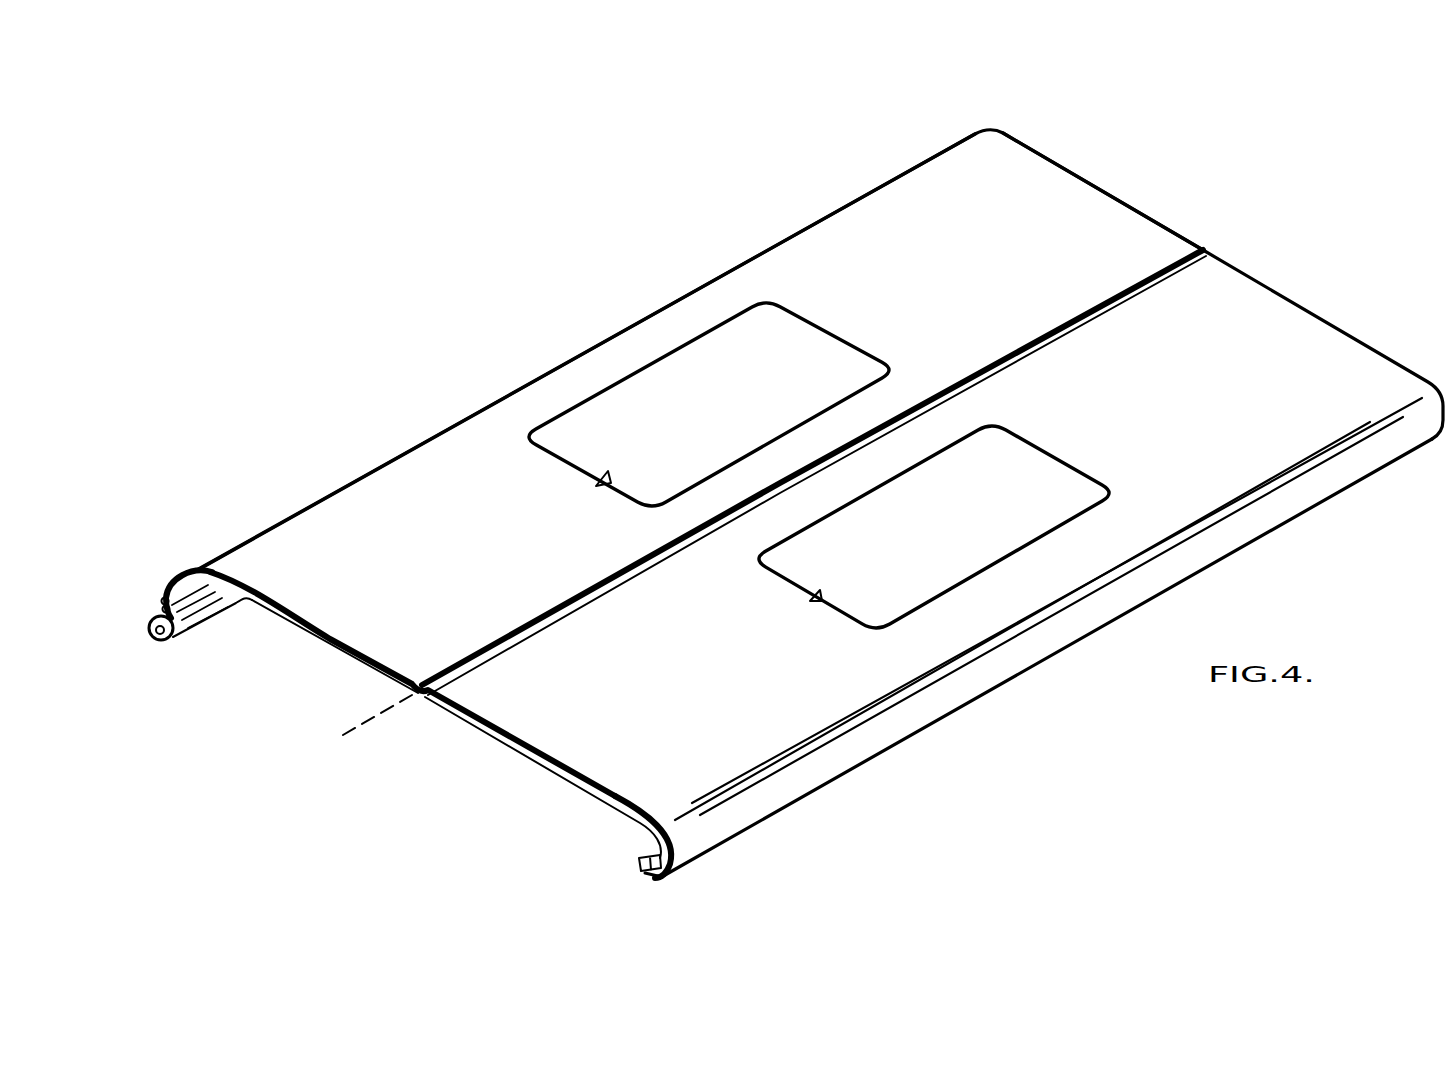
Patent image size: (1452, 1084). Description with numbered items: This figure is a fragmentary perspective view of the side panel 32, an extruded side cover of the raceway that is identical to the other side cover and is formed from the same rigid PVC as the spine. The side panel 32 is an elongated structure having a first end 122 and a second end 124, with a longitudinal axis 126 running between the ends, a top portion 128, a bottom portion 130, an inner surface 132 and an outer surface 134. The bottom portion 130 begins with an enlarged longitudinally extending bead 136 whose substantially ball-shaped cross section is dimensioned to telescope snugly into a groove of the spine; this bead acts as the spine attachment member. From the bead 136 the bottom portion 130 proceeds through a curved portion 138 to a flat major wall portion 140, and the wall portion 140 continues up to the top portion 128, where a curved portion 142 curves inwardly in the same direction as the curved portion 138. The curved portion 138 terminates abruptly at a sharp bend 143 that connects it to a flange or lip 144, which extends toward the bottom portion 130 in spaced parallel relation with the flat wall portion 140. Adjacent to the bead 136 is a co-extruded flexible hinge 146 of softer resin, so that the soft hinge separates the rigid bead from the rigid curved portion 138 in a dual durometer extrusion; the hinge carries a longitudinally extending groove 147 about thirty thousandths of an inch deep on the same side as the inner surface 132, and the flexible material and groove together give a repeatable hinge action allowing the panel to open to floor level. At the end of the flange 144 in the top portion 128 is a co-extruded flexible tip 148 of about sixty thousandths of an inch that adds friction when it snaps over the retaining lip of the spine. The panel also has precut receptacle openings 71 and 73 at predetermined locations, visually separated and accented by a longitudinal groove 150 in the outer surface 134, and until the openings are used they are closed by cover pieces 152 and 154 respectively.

The side panel 32 is at (612, 304).
The flat major wall portion 140 is at (430, 470).
The second end 124 is at (1126, 198).
The curved portion 142 is at (904, 722).
The top portion 128 is at (1007, 691).
The longitudinal groove 150 is at (542, 620).
The cover piece 152 is at (826, 348).
The cover piece 154 is at (1047, 480).
The receptacle opening 71 is at (596, 486).
The receptacle opening 73 is at (810, 601).
The outer surface 134 is at (644, 790).
The curved portion 138 is at (190, 575).
The first end 122 is at (372, 623).
The inner surface 132 is at (560, 770).
The bottom portion 130 is at (244, 604).
The hinge groove 147 is at (200, 630).
The flexible hinge 146 is at (160, 602).
The bead (spine attachment member) 136 is at (157, 641).
The longitudinal axis 126 is at (385, 717).
The sharp bend 143 is at (668, 878).
The flexible tip 148 is at (638, 865).
The flange (lip) 144 is at (656, 878).